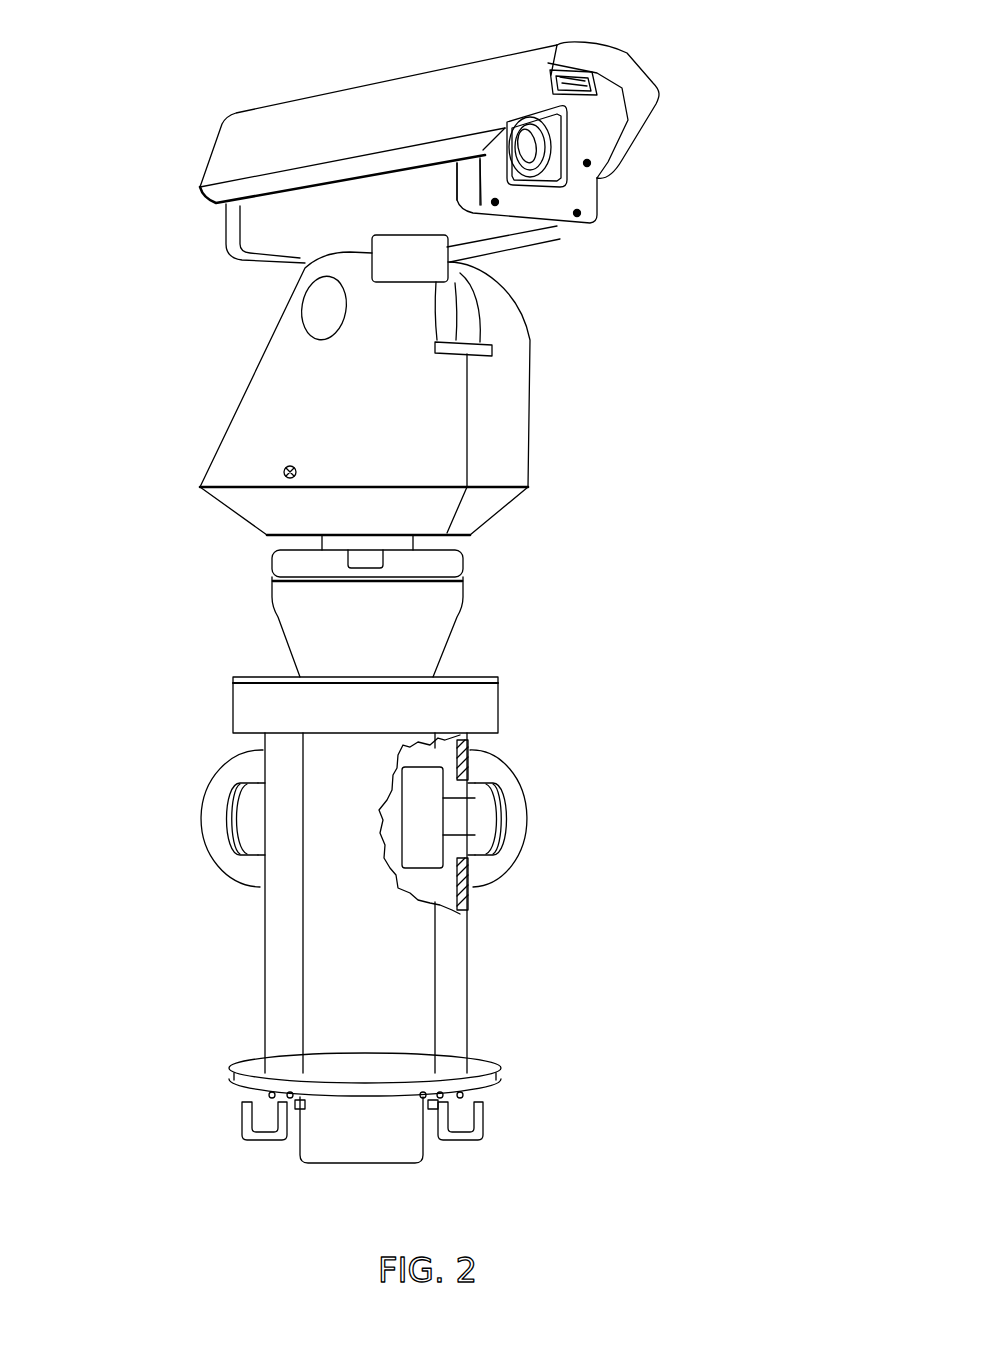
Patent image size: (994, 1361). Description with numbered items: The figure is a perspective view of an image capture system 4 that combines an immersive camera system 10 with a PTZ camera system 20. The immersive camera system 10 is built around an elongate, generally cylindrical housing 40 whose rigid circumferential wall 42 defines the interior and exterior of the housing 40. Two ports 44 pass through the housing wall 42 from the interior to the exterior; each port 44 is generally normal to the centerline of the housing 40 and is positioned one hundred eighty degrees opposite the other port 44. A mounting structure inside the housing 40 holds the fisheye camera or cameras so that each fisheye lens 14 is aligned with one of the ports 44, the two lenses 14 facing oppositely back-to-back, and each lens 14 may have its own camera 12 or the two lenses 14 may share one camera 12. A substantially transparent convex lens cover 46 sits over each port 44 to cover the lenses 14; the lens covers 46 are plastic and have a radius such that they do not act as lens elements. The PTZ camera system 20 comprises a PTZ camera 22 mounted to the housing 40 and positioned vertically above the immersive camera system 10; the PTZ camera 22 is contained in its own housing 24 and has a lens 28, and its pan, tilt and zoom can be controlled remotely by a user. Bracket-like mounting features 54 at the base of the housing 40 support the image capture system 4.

The image capture system 4 is at (361, 609).
The immersive camera system 10 is at (301, 937).
The camera 12 is at (426, 828).
The fisheye lens 14 is at (225, 822).
The PTZ camera system 20 is at (430, 359).
The PTZ camera 22 is at (552, 180).
The housing 24 is at (262, 219).
The lens 28 is at (533, 152).
The housing 40 is at (385, 991).
The circumferential wall 42 is at (265, 1015).
The port 44 is at (262, 773).
The lens cover 46 is at (210, 835).
The mounting bracket 54 is at (268, 1142).